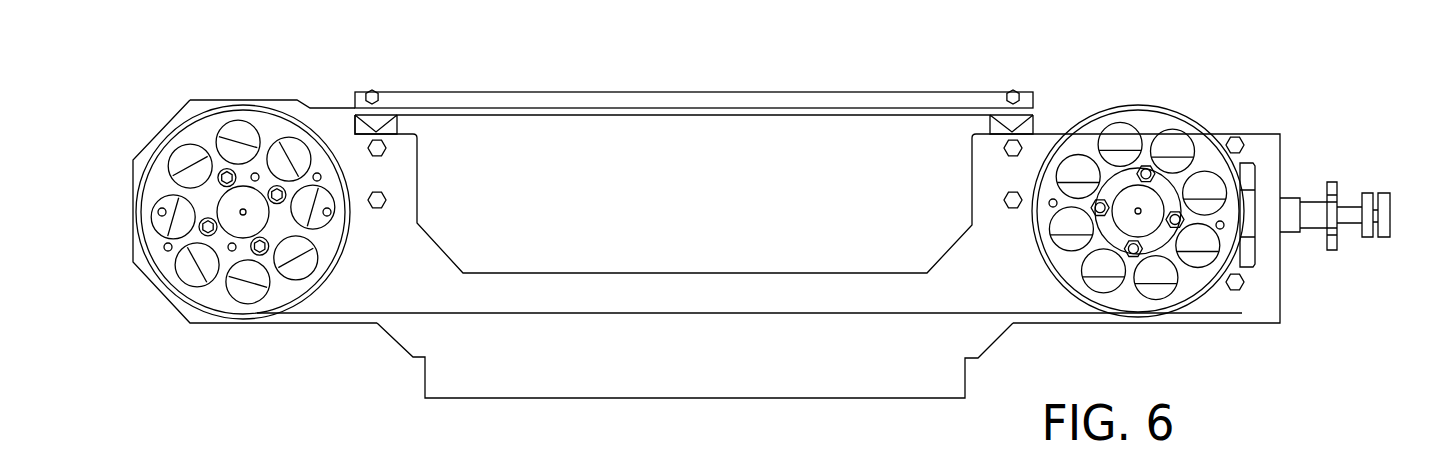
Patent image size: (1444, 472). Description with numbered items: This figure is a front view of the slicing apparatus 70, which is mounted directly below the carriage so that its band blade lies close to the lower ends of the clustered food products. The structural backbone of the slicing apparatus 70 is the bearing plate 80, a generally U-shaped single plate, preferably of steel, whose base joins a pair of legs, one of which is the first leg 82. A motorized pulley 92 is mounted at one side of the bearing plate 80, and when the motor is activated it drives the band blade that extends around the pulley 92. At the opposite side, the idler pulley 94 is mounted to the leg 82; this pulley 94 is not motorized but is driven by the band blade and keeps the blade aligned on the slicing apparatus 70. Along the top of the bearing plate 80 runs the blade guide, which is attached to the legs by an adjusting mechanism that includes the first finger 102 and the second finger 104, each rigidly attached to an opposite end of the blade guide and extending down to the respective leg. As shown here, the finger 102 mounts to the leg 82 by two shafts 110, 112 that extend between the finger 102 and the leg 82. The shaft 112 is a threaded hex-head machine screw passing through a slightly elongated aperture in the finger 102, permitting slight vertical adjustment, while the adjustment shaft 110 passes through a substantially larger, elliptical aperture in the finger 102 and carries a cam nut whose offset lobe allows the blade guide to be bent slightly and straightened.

The slicing apparatus 70 is at (710, 72).
The bearing plate 80 is at (518, 420).
The first leg 82 is at (1268, 150).
The pulley 92 is at (273, 132).
The pulley 94 is at (1147, 132).
The first finger 102 is at (1017, 124).
The second finger 104 is at (375, 128).
The shaft 110 is at (1005, 200).
The shaft 112 is at (1005, 148).